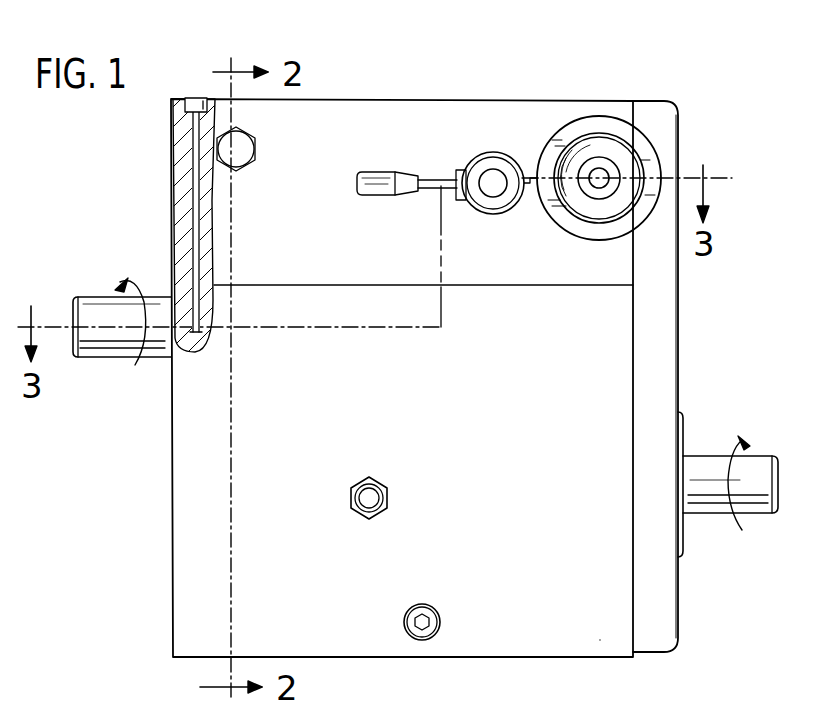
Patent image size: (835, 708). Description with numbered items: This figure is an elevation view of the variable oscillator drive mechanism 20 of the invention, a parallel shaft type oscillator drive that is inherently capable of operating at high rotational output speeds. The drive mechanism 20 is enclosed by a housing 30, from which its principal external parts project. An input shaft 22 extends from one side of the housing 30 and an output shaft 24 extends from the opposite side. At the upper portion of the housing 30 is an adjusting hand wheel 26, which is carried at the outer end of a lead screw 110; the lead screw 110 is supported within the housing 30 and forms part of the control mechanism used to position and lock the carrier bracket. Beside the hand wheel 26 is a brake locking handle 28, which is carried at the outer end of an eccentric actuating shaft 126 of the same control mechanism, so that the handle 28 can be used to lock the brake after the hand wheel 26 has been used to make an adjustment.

The variable oscillator drive mechanism 20 is at (575, 99).
The input shaft 22 is at (91, 305).
The output shaft 24 is at (702, 458).
The adjusting hand wheel 26 is at (657, 161).
The brake locking handle 28 is at (430, 180).
The housing 30 is at (591, 629).
The lead screw 110 is at (603, 172).
The eccentric actuating shaft 126 is at (494, 170).